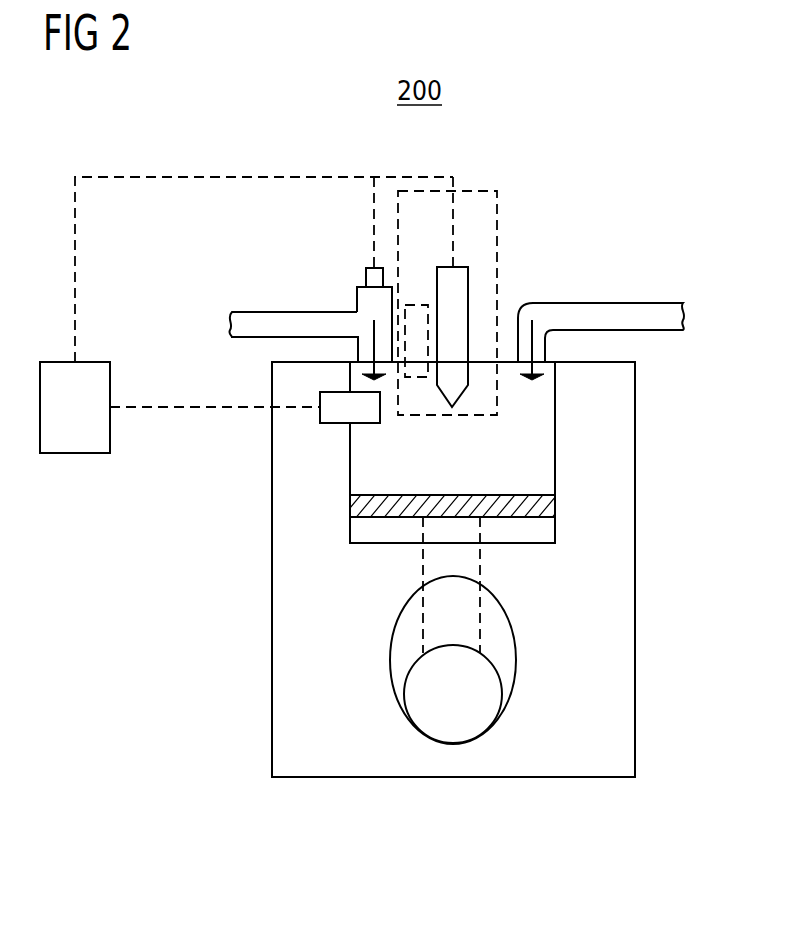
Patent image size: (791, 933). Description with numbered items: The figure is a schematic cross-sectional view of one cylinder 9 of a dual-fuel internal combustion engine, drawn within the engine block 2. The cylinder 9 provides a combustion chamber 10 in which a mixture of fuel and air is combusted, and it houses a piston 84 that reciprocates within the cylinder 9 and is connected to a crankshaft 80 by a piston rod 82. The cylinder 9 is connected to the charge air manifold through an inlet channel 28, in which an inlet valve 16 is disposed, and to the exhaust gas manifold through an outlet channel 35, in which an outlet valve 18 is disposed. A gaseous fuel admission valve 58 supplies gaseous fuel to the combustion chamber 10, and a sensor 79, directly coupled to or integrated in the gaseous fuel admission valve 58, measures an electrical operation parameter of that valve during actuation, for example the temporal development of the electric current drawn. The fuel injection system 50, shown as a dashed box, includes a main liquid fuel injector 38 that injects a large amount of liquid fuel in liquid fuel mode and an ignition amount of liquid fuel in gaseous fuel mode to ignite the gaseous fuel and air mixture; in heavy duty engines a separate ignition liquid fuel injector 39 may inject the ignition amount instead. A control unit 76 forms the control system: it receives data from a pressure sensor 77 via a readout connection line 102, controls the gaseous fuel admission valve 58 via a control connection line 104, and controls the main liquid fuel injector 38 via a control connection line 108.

The engine block 2 is at (637, 596).
The cylinder 9 is at (557, 445).
The combustion chamber 10 is at (441, 480).
The inlet valve 16 is at (375, 381).
The outlet valve 18 is at (532, 382).
The inlet channel 28 is at (278, 320).
The outlet channel 35 is at (620, 320).
The main liquid fuel injector 38 is at (457, 283).
The ignition liquid fuel injector 39 is at (410, 306).
The fuel injection system 50 is at (499, 256).
The gaseous fuel admission valve 58 is at (368, 304).
The control unit 76 is at (75, 455).
The pressure sensor 77 is at (333, 425).
The sensor 79 is at (368, 272).
The crankshaft 80 is at (483, 705).
The piston rod 82 is at (482, 570).
The piston 84 is at (557, 508).
The readout connection line 102 is at (207, 410).
The control connection line 104 is at (372, 222).
The control connection line 108 is at (455, 180).